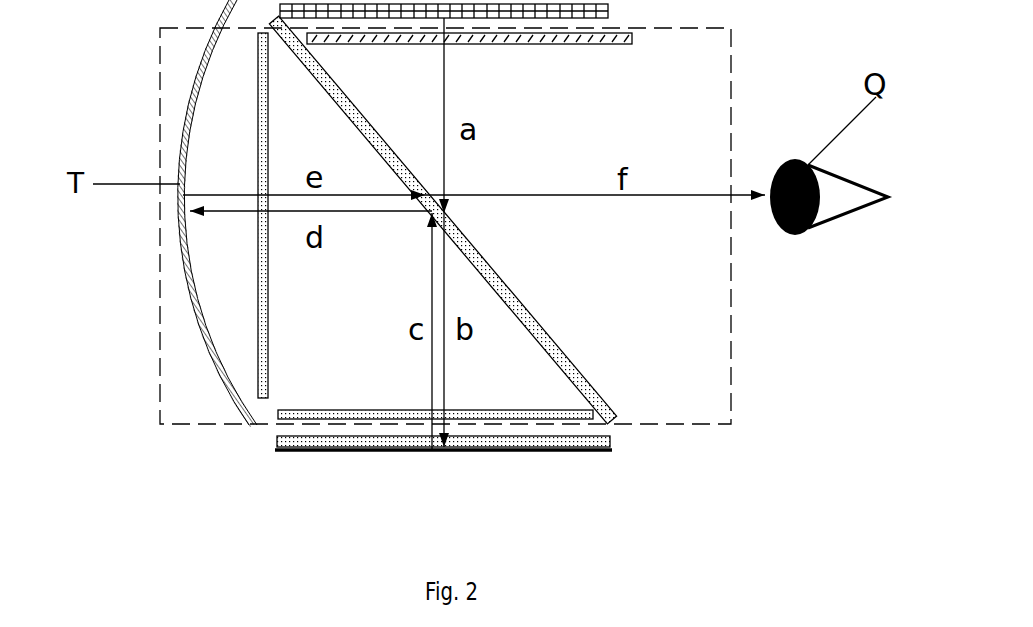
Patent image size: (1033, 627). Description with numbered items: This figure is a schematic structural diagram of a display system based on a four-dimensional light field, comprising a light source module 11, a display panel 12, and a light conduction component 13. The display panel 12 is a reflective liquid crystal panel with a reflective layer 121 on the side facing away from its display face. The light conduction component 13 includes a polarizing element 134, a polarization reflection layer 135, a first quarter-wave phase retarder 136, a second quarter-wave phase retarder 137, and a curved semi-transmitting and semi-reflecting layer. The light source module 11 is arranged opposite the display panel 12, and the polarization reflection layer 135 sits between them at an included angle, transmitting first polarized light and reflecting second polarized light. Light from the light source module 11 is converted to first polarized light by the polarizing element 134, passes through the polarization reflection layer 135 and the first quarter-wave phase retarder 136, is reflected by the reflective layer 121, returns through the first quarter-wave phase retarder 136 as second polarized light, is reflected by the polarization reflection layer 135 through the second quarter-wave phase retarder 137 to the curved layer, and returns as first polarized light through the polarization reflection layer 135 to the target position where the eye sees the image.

The light source module 11 is at (585, 12).
The display panel 12 is at (590, 441).
The reflective layer 121 is at (460, 451).
The light conduction component 13 is at (160, 72).
The polarizing element 134 is at (592, 42).
The polarization reflection layer 135 is at (557, 355).
The first quarter-wave phase retarder 136 is at (322, 411).
The second quarter-wave phase retarder 137 is at (262, 361).